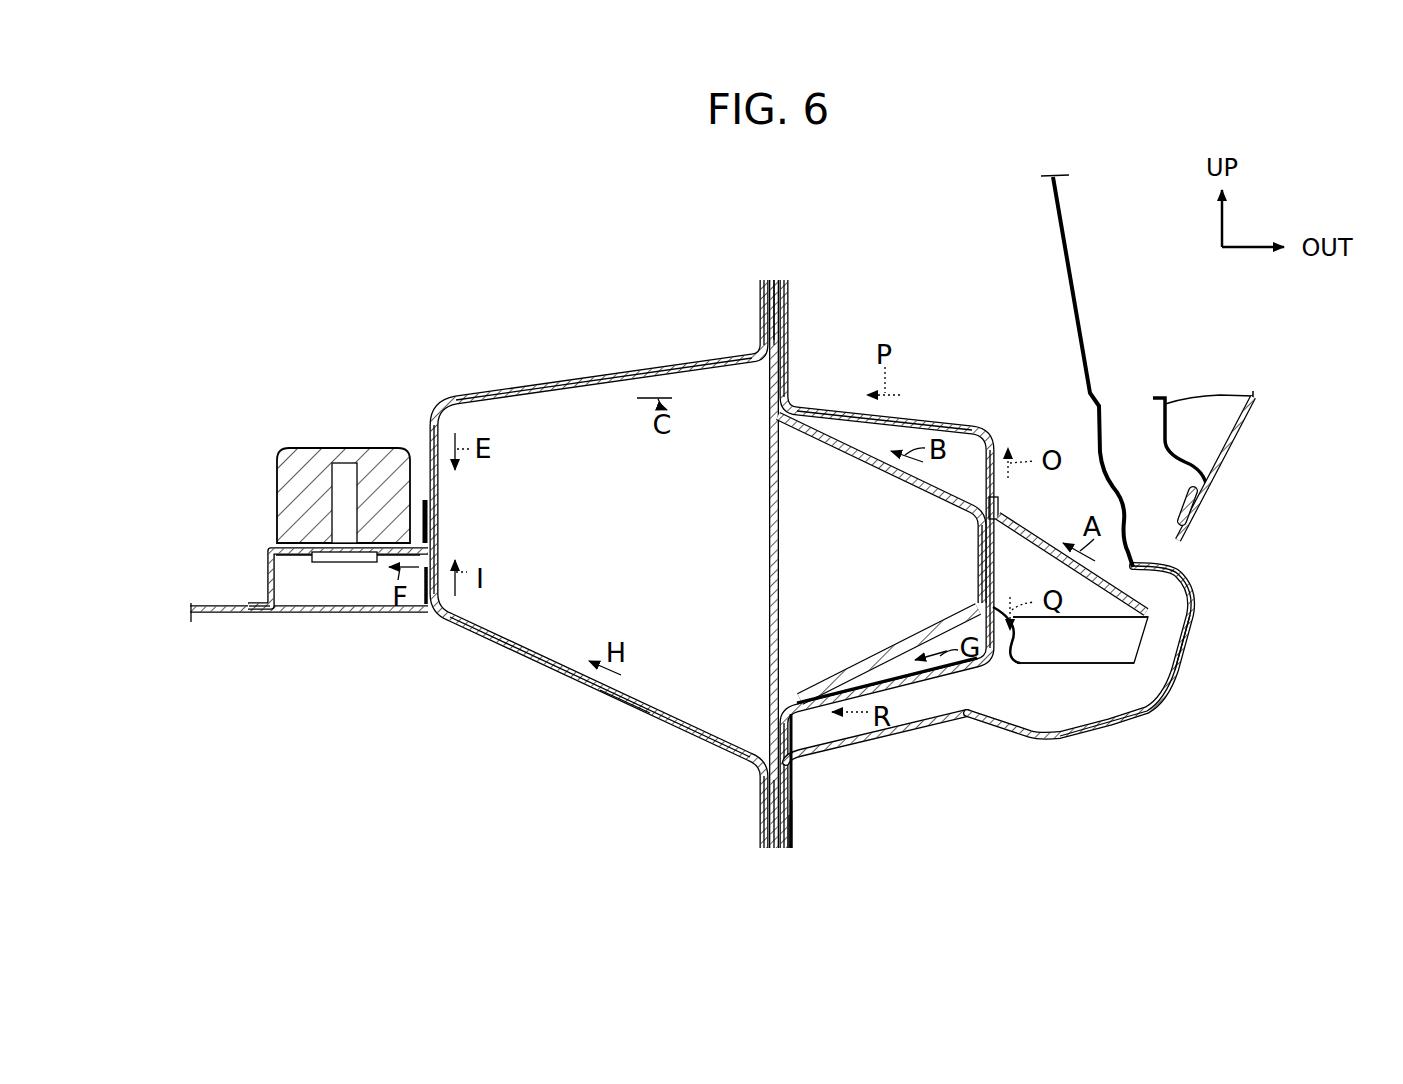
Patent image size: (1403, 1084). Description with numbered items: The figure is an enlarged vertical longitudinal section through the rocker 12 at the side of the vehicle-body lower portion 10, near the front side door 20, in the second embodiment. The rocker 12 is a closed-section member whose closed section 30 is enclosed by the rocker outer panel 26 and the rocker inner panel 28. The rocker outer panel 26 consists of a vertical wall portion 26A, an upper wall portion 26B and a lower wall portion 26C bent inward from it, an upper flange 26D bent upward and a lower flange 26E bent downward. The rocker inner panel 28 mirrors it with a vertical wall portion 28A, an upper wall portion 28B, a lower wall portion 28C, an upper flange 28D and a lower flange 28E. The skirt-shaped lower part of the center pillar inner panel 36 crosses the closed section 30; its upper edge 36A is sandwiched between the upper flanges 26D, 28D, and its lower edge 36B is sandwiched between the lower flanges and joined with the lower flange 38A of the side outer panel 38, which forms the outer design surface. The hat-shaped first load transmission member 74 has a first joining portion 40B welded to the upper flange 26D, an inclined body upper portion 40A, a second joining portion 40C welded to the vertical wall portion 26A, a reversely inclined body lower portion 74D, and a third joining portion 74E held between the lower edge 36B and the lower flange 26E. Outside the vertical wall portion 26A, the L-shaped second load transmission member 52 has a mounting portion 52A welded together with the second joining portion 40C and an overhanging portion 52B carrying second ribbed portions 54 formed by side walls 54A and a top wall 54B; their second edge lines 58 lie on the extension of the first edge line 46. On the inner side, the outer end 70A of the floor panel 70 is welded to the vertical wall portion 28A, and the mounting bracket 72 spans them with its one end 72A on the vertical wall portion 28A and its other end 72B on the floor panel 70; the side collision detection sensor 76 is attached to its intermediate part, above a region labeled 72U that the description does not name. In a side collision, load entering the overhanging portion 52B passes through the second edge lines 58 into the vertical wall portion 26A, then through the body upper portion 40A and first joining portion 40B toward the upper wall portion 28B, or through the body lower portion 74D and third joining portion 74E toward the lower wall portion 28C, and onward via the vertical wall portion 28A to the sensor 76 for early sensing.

The vehicle-body lower portion 10 is at (1263, 578).
The rocker 12 is at (611, 760).
The front side door 20 is at (1236, 425).
The rocker outer panel 26 is at (825, 405).
The vertical wall portion 26A is at (1023, 733).
The upper wall portion 26B is at (942, 425).
The lower wall portion 26C is at (963, 703).
The upper flange 26D is at (790, 300).
The lower flange 26E is at (793, 805).
The rocker inner panel 28 is at (582, 686).
The vertical wall portion 28A is at (440, 490).
The upper wall portion 28B is at (571, 383).
The lower wall portion 28C is at (522, 652).
The upper flange 28D is at (760, 300).
The lower flange 28E is at (763, 808).
The closed section 30 is at (615, 537).
The center pillar inner panel 36 is at (767, 485).
The upper edge 36A is at (772, 332).
The lower edge 36B is at (776, 850).
The side outer panel 38 is at (1081, 285).
The lower flange 38A is at (796, 832).
The body upper portion 40A is at (855, 478).
The first joining portion 40B is at (772, 279).
The second joining portion 40C is at (977, 563).
The first edge line 46 is at (985, 440).
The second load transmission member 52 is at (1113, 672).
The mounting portion 52A is at (998, 507).
The overhanging portion 52B is at (1073, 645).
The second ribbed portion 54 is at (1283, 600).
The side walls 54A is at (1107, 638).
The top wall 54B is at (1125, 585).
The second edge line 58 is at (1150, 568).
The floor panel 70 is at (203, 603).
The outer end 70A is at (426, 601).
The mounting bracket 72 is at (265, 555).
The one end 72A is at (427, 500).
The other end 72B is at (258, 600).
The bracket underside space 72U is at (297, 556).
The first load transmission member 74 is at (903, 665).
The body lower portion 74D is at (822, 688).
The third joining portion 74E is at (790, 850).
The side collision detection sensor 76 is at (340, 448).